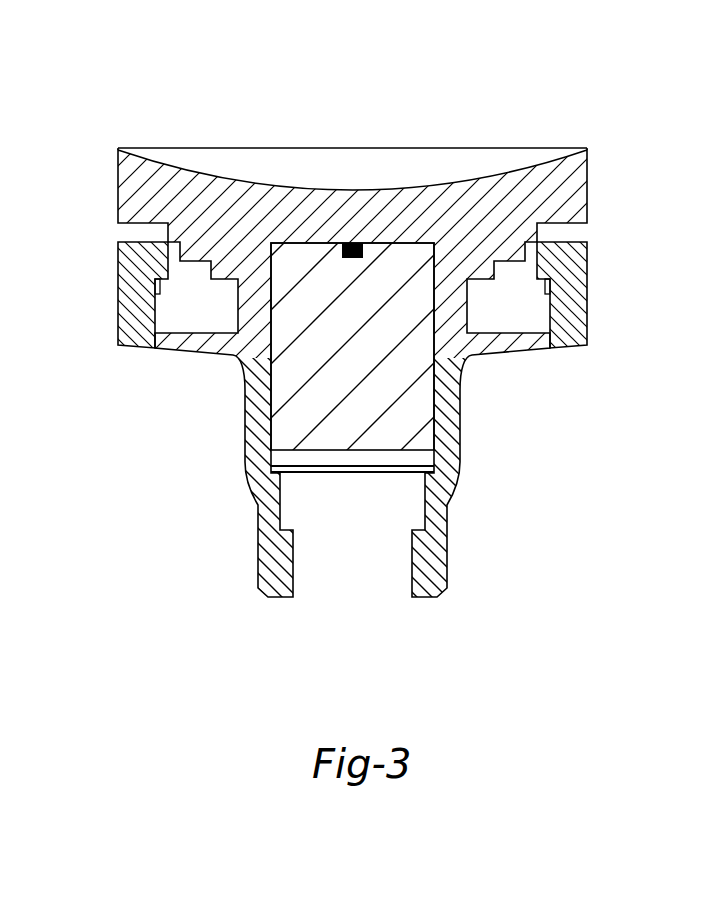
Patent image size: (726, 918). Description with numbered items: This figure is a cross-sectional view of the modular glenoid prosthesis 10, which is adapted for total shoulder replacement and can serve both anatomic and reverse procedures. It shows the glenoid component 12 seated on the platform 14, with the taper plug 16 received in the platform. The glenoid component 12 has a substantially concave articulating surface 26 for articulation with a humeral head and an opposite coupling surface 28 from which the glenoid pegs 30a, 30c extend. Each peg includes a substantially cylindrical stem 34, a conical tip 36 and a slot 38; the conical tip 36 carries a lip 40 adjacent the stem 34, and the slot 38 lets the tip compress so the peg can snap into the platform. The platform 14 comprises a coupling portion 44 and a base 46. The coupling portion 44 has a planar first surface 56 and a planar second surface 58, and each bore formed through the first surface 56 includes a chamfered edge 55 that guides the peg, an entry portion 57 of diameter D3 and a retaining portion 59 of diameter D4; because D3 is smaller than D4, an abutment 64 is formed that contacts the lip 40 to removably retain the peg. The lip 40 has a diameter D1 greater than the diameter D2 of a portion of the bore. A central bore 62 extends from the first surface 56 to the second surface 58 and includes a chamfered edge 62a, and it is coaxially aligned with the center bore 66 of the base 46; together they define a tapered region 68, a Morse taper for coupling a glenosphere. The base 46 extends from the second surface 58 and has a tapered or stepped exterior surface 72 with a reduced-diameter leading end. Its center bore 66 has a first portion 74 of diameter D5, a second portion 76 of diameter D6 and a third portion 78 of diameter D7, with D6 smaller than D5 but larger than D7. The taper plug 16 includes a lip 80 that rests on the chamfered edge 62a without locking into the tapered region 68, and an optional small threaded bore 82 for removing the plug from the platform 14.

The modular glenoid prosthesis 10 is at (492, 83).
The glenoid component 12 is at (589, 146).
The platform 14 is at (612, 302).
The taper plug 16 is at (261, 402).
The articulating surface 26 is at (346, 190).
The coupling surface 28 is at (477, 236).
The glenoid peg 30a is at (183, 333).
The glenoid peg 30c is at (557, 327).
The stem 34 is at (163, 228).
The conical tip 36 is at (142, 330).
The slot 38 is at (177, 270).
The lip 40 is at (162, 288).
The coupling portion 44 is at (622, 250).
The base 46 is at (436, 606).
The chamfered edge 55 is at (230, 262).
The first surface 56 is at (249, 243).
The entry portion 57 is at (193, 262).
The second surface 58 is at (130, 348).
The retaining portion 59 is at (224, 322).
The central bore 62 is at (338, 235).
The chamfered edge 62a is at (258, 243).
The abutment 64 is at (236, 263).
The center bore 66 is at (268, 505).
The tapered region 68 is at (273, 378).
The exterior surface 72 is at (450, 525).
The first portion 74 is at (286, 458).
The second portion 76 is at (283, 513).
The third portion 78 is at (294, 580).
The lip 80 is at (438, 243).
The threaded bore 82 is at (354, 259).
The diameter of the lip D1 is at (473, 395).
The diameter of a portion of the bore D2 is at (482, 358).
The diameter of the entry portion D3 is at (158, 262).
The diameter of the retaining portion D4 is at (145, 318).
The diameter of the first portion D5 is at (423, 675).
The diameter of the second portion D6 is at (414, 645).
The diameter of the third portion D7 is at (402, 620).